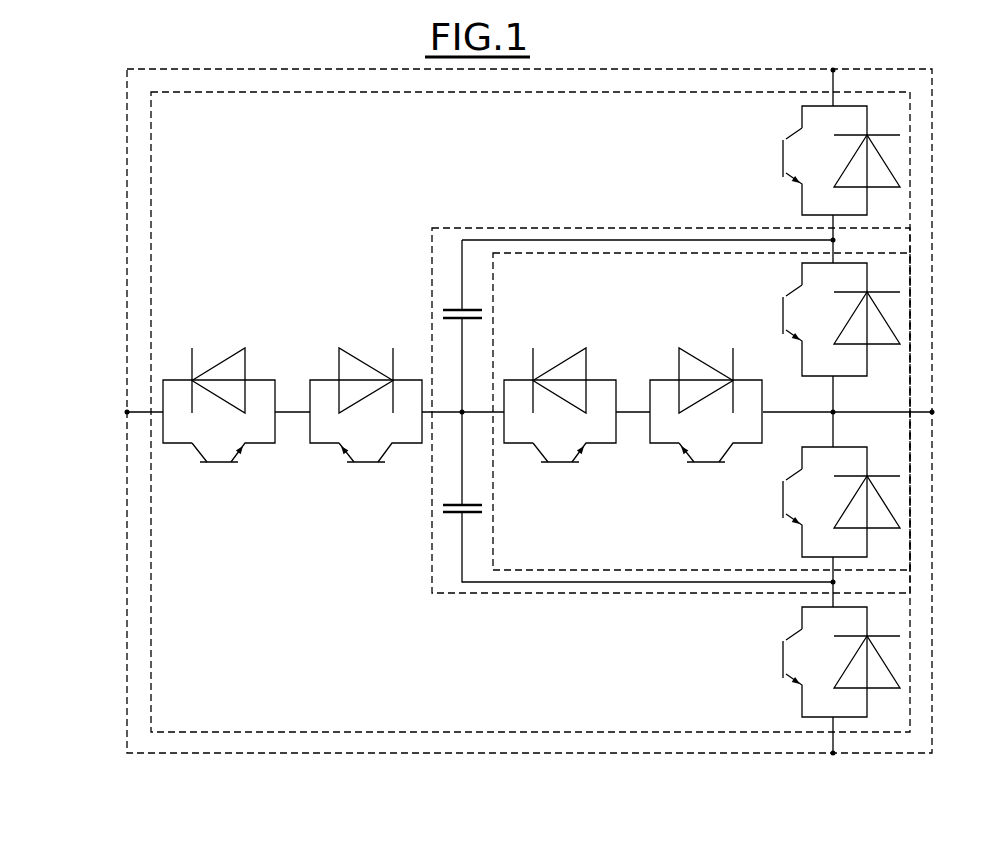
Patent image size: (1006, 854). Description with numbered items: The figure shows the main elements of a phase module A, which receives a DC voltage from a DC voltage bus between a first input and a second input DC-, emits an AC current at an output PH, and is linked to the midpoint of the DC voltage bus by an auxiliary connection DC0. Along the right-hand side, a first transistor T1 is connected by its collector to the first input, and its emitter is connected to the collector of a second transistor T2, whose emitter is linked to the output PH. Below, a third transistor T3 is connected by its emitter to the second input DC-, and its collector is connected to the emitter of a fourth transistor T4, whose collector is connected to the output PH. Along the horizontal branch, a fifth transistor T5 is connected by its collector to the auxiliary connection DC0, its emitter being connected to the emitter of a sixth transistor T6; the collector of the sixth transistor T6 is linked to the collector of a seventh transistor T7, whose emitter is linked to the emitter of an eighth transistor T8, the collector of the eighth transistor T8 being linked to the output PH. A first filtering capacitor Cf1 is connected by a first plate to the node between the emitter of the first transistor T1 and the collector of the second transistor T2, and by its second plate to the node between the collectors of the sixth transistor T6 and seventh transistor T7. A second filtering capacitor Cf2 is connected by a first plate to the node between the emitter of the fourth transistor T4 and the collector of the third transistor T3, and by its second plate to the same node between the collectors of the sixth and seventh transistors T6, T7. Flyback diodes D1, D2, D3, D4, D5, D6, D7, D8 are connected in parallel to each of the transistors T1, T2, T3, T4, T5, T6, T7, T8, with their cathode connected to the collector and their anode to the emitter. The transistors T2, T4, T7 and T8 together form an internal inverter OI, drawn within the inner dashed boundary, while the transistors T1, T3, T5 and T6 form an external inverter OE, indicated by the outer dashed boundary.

The phase module A is at (127, 247).
The external inverter OE is at (910, 107).
The internal inverter OI is at (910, 265).
The second input DC- is at (834, 763).
The auxiliary connection DC0 is at (108, 412).
The output PH is at (945, 412).
The first transistor T1 is at (772, 142).
The second transistor T2 is at (772, 303).
The third transistor T3 is at (772, 680).
The fourth transistor T4 is at (772, 519).
The fifth transistor T5 is at (220, 478).
The sixth transistor T6 is at (365, 478).
The seventh transistor T7 is at (560, 478).
The eighth transistor T8 is at (705, 478).
The flyback diode D1 is at (900, 155).
The flyback diode D2 is at (900, 313).
The flyback diode D3 is at (900, 660).
The flyback diode D4 is at (900, 500).
The flyback diode D5 is at (215, 340).
The flyback diode D6 is at (365, 340).
The flyback diode D7 is at (556, 340).
The flyback diode D8 is at (703, 340).
The first filtering capacitor Cf1 is at (440, 303).
The second filtering capacitor Cf2 is at (440, 515).